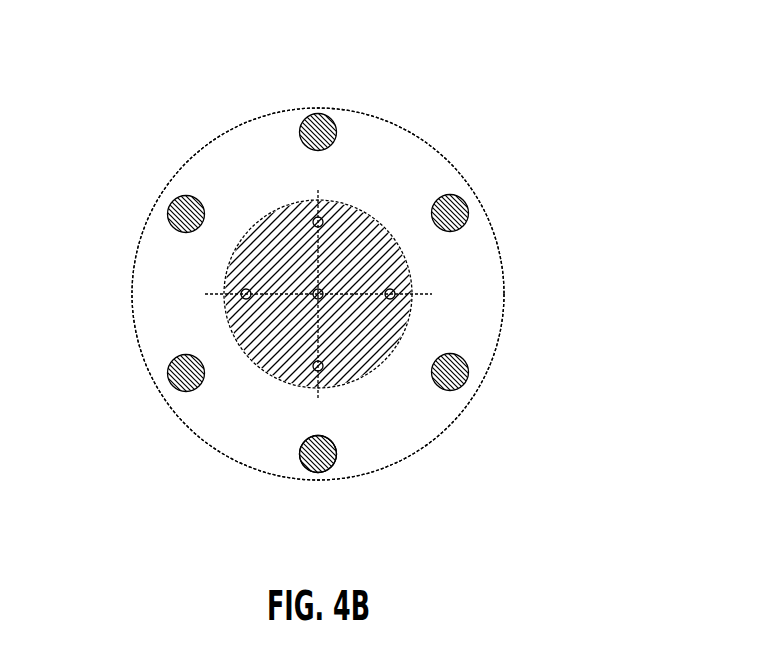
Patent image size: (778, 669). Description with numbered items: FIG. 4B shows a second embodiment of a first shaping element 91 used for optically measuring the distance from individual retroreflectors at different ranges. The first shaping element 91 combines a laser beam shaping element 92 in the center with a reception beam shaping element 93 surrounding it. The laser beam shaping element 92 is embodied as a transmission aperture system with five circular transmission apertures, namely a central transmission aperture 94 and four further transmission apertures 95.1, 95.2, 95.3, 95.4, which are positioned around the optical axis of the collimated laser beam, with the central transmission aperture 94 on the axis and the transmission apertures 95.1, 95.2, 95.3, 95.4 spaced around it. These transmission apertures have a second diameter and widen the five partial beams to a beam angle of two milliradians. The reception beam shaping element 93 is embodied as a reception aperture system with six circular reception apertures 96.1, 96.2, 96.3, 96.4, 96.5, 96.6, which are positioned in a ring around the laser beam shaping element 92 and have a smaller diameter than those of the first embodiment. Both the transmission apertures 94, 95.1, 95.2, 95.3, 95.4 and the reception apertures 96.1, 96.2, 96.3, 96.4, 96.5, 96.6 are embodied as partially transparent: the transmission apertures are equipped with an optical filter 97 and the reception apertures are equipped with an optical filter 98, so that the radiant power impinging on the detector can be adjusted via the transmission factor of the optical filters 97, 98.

The first shaping element 91 is at (548, 103).
The laser beam shaping element 92 is at (358, 232).
The reception beam shaping element 93 is at (225, 420).
The transmission aperture 94 is at (318, 295).
The transmission aperture 95.1 is at (395, 294).
The transmission aperture 95.2 is at (318, 217).
The transmission aperture 95.3 is at (241, 294).
The transmission aperture 95.4 is at (318, 371).
The reception aperture 96.1 is at (468, 213).
The reception aperture 96.2 is at (318, 113).
The reception aperture 96.3 is at (168, 214).
The reception aperture 96.4 is at (168, 373).
The reception aperture 96.5 is at (318, 473).
The reception aperture 96.6 is at (468, 372).
The optical filter 97 is at (262, 237).
The optical filter 98 is at (337, 455).